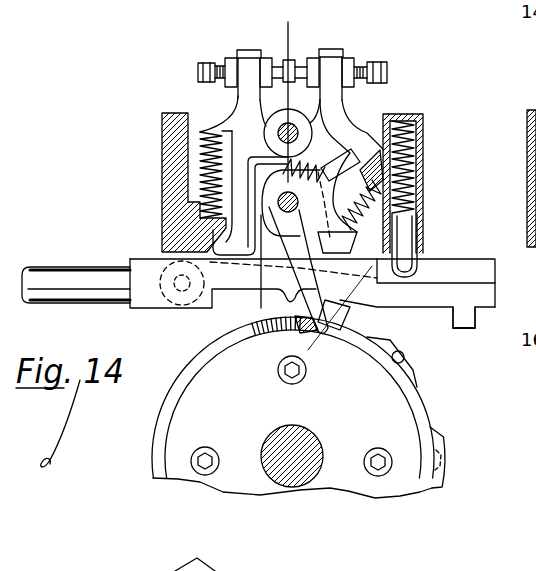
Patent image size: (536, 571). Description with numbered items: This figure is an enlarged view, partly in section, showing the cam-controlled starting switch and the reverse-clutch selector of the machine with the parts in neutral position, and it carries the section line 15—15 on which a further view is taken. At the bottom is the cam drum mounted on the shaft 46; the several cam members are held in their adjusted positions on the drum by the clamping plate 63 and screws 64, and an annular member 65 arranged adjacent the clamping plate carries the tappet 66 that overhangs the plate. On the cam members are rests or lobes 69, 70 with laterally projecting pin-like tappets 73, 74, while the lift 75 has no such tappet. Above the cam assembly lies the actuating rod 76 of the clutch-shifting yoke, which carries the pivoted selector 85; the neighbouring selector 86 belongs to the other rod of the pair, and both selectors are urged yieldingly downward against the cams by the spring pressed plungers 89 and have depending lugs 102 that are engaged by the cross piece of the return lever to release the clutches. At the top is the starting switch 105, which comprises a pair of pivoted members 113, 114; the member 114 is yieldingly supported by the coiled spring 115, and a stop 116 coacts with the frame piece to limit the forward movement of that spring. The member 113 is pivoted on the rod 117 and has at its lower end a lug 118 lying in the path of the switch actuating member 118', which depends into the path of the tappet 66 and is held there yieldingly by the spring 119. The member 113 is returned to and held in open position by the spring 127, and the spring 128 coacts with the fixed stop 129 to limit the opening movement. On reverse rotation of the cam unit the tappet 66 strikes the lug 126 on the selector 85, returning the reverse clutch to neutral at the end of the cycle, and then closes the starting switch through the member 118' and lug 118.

The section line 15— 15 is at (297, 26).
The shaft 46 is at (302, 438).
The clamping plate 63 is at (228, 478).
The screws 64 is at (205, 446).
The annular member 65 is at (236, 340).
The tappet 66 is at (303, 334).
The lobe 69 is at (442, 448).
The lobe 70 is at (408, 374).
The pin-like tappet 73 is at (448, 466).
The pin-like tappet 74 is at (410, 349).
The lift 75 is at (355, 322).
The actuating rod 76 is at (83, 283).
The selector 85 is at (477, 299).
The selector 86 is at (473, 268).
The spring pressed plunger 89 is at (424, 227).
The depending lug 102 is at (465, 318).
The starting switch 105 is at (336, 52).
The switch member 113 is at (335, 117).
The switch member 114 is at (237, 118).
The coiled spring 115 is at (200, 162).
The stop 116 is at (220, 238).
The rod 117 is at (296, 228).
The lug 118 is at (329, 304).
The switch actuating member 118' is at (341, 327).
The spring 119 is at (282, 160).
The lug 126 is at (383, 296).
The spring 127 is at (416, 186).
The spring 128 is at (421, 126).
The fixed stop 129 is at (394, 163).